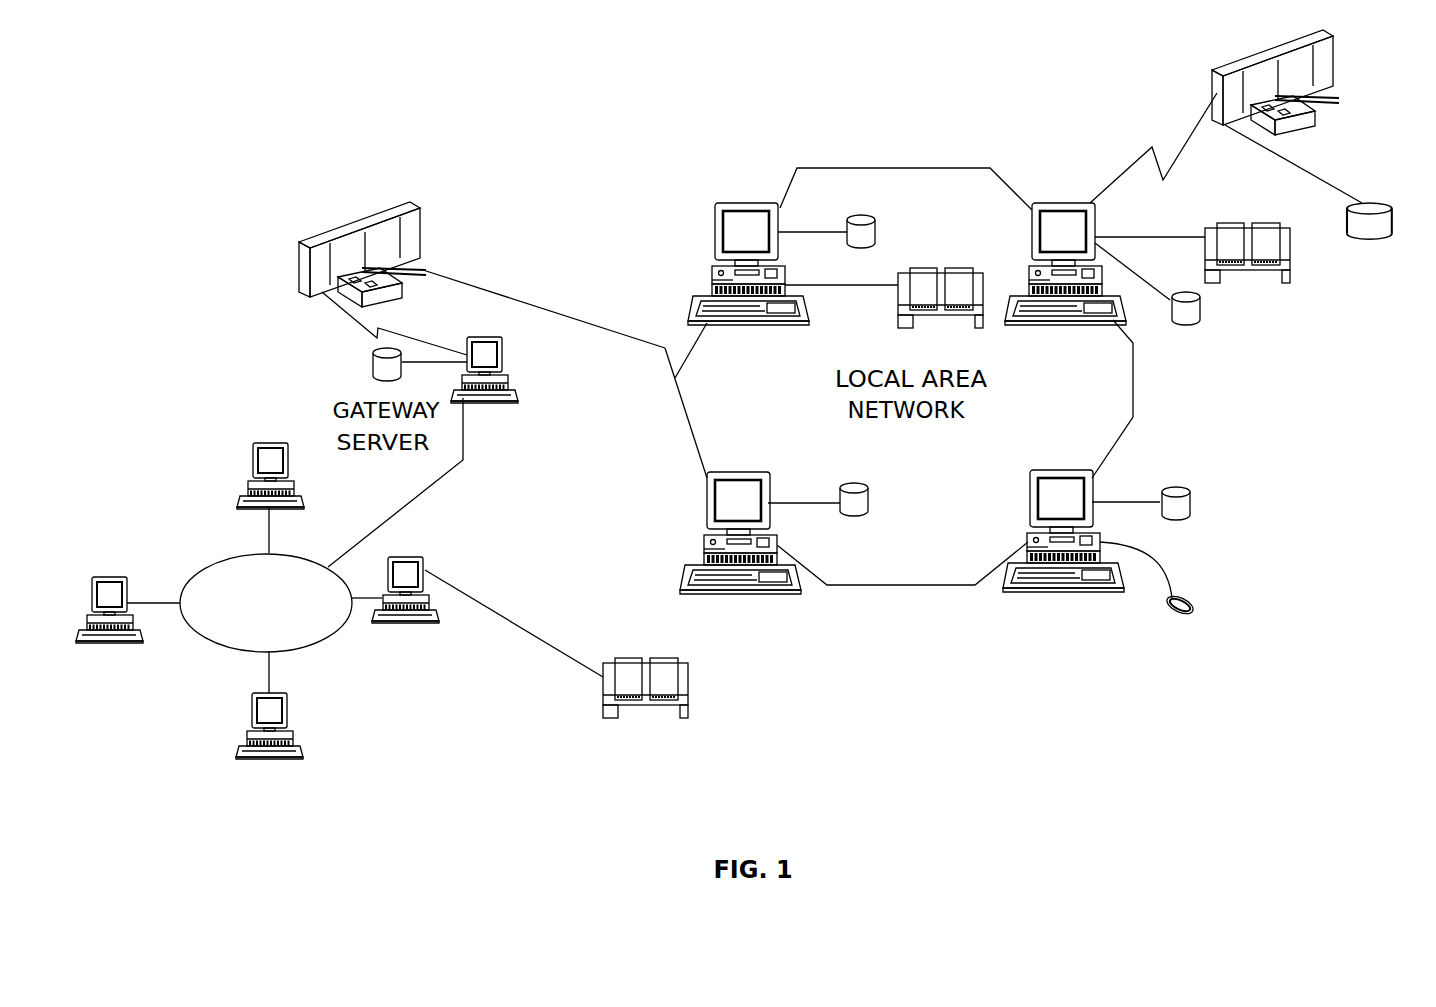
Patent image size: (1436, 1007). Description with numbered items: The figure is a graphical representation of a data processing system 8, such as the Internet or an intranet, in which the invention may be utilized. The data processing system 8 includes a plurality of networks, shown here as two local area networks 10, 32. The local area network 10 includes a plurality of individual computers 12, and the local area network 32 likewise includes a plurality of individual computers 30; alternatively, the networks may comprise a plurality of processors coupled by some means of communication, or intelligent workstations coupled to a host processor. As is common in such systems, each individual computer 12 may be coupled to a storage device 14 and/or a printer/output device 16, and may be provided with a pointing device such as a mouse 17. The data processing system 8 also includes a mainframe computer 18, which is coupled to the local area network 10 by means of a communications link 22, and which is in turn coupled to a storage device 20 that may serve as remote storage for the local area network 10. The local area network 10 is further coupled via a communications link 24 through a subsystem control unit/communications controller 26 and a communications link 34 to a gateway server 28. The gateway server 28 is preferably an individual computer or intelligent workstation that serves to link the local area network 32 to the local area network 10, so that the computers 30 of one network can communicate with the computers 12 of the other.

The data processing system 8 is at (862, 168).
The local area network 10 is at (888, 587).
The individual computer 12 is at (732, 205).
The storage device 14 is at (877, 230).
The printer/output device 16 is at (938, 272).
The mouse 17 is at (1187, 600).
The mainframe computer 18 is at (1280, 48).
The storage device 20 is at (1383, 202).
The communications link 22 is at (1197, 125).
The communications link 24 is at (545, 313).
The subsystem control unit/communications controller 26 is at (412, 208).
The gateway server 28 is at (478, 337).
The individual computer 30 is at (262, 445).
The local area network 32 is at (210, 647).
The communications link 34 is at (337, 307).